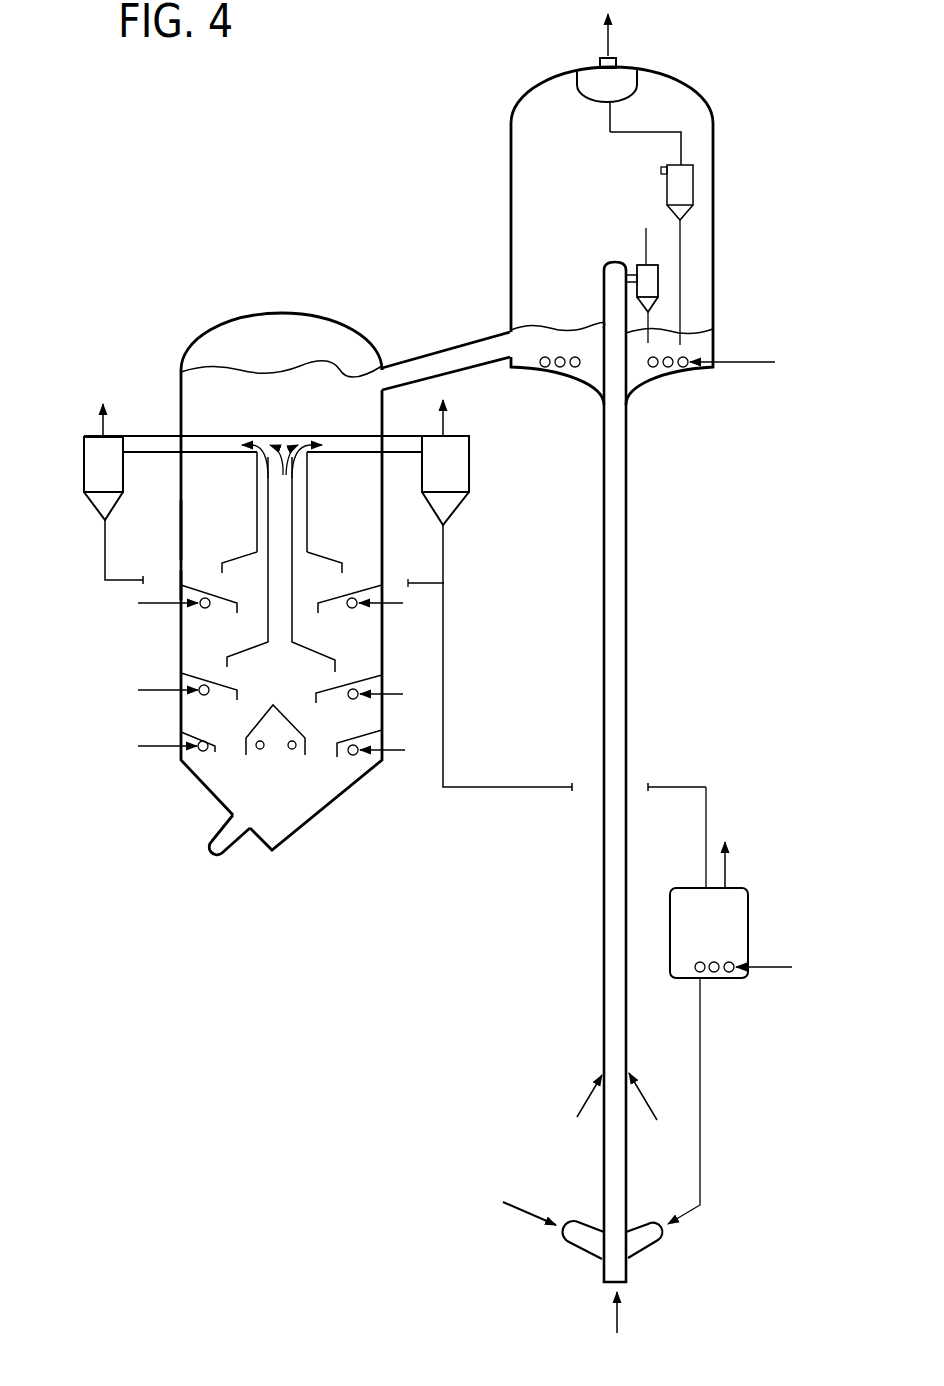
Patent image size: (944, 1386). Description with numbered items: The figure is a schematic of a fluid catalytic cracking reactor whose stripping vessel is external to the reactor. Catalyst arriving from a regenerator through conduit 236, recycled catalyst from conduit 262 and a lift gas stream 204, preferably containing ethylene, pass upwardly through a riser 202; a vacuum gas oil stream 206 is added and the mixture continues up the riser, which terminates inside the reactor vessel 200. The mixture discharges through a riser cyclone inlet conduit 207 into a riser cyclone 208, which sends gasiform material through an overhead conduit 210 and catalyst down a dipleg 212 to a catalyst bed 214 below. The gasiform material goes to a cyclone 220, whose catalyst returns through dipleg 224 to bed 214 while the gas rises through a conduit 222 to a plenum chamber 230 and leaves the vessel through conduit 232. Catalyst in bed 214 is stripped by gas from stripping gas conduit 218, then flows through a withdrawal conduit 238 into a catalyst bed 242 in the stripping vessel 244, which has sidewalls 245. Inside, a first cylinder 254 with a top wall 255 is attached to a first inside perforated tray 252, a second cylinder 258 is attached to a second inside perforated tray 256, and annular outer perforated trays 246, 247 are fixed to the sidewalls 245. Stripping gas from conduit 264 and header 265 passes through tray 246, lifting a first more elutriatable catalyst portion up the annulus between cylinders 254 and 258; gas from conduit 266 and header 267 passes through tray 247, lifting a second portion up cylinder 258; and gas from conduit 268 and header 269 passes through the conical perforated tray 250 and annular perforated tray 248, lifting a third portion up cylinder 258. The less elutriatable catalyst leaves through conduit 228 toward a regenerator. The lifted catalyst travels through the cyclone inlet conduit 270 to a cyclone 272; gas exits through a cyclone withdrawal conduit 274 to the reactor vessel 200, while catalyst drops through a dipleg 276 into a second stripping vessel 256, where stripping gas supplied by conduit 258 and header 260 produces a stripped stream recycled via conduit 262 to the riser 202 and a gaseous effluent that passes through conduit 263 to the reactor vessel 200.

The reactor vessel 200 is at (511, 215).
The riser 202 is at (604, 938).
The lift gas stream 204 is at (620, 1312).
The vacuum gas oil stream 206 is at (586, 1096).
The riser cyclone inlet conduit 207 is at (630, 275).
The riser cyclone 208 is at (658, 285).
The overhead conduit 210 is at (626, 233).
The dipleg 212 is at (650, 330).
The catalyst bed 214 is at (561, 347).
The stripping gas conduit 218 is at (738, 364).
The cyclone 220 is at (694, 184).
The conduit 222 is at (686, 146).
The dipleg 224 is at (681, 260).
The conduit 228 is at (234, 843).
The plenum chamber 230 is at (600, 102).
The conduit 232 is at (617, 63).
The conduit 236 is at (578, 1250).
The withdrawal conduit 238 is at (442, 350).
The catalyst bed 242 is at (281, 605).
The stripping vessel 244 is at (233, 320).
The sidewalls 245 is at (180, 529).
The annular outer perforated tray 246 is at (180, 588).
The annular outer perforated tray 247 is at (205, 672).
The annular perforated tray 248 is at (214, 742).
The conical perforated tray 250 is at (292, 712).
The first inside perforated tray 252 is at (250, 556).
The first cylinder 254 is at (257, 470).
The top wall 255 is at (279, 436).
The second inside perforated tray 256 is at (748, 926).
The second cylinder 258 is at (760, 972).
The stripping gas header 260 is at (728, 973).
The conduit 262 is at (645, 1250).
The conduit 263 is at (730, 863).
The stripping gas conduit 264 is at (138, 608).
The header 265 is at (203, 610).
The conduit 266 is at (138, 694).
The stripping gas header 267 is at (202, 696).
The conduit 268 is at (166, 753).
The header 269 is at (203, 752).
The cyclone inlet conduit 270 is at (150, 437).
The cyclone 272 is at (84, 476).
The cyclone withdrawal conduit 274 is at (101, 426).
The dipleg 276 is at (100, 560).